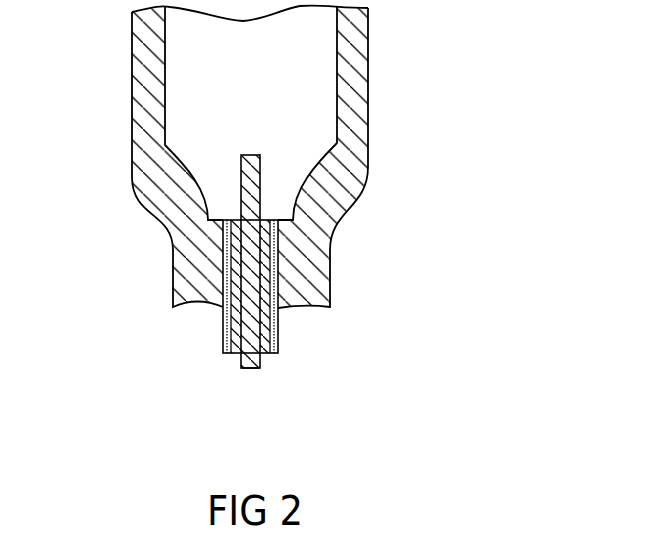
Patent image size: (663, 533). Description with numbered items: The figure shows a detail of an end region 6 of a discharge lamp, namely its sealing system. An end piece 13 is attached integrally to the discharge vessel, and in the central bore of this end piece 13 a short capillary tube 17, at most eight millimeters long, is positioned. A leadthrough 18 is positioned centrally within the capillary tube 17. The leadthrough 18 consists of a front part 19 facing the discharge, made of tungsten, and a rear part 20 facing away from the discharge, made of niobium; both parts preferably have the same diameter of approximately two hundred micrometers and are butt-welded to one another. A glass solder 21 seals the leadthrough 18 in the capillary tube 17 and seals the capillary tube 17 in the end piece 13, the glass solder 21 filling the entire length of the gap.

The end region 6 is at (264, 213).
The end piece 13 is at (308, 275).
The capillary tube 17 is at (259, 310).
The leadthrough 18 is at (238, 373).
The front part 19 is at (260, 171).
The rear part 20 is at (253, 369).
The glass solder 21 is at (237, 338).